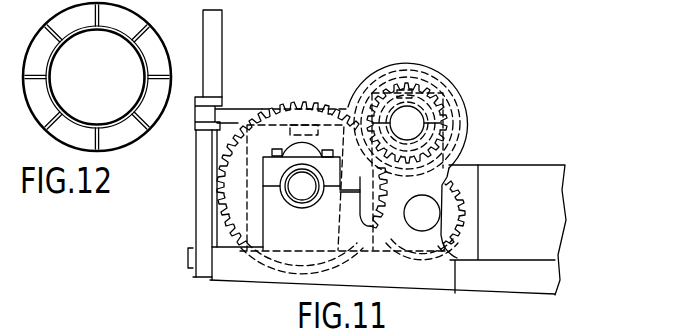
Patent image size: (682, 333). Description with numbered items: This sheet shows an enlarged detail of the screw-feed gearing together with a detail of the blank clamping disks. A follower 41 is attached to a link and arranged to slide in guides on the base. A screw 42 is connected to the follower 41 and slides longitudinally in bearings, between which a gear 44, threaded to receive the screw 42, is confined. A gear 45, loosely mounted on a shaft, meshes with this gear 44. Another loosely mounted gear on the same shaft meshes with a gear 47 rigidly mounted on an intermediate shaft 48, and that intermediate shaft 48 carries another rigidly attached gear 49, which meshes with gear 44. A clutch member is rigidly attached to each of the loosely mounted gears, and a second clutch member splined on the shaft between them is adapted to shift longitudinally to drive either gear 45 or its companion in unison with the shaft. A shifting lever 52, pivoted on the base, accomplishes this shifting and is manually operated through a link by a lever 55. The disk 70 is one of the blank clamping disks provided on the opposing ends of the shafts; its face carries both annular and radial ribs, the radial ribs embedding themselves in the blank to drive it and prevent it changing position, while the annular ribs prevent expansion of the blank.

In FIG. 12, the disk 70 is at (150, 50).
In FIG. 11, the follower 41 is at (231, 138).
In FIG. 11, the lever 55 is at (216, 47).
In FIG. 11, the shifting lever 52 is at (234, 113).
In FIG. 11, the gear 44 is at (235, 185).
In FIG. 11, the screw 42 is at (297, 187).
In FIG. 11, the gear 45 is at (413, 88).
In FIG. 11, the gear 47 is at (457, 207).
In FIG. 11, the intermediate shaft 48 is at (421, 222).
In FIG. 11, the gear 49 is at (457, 247).